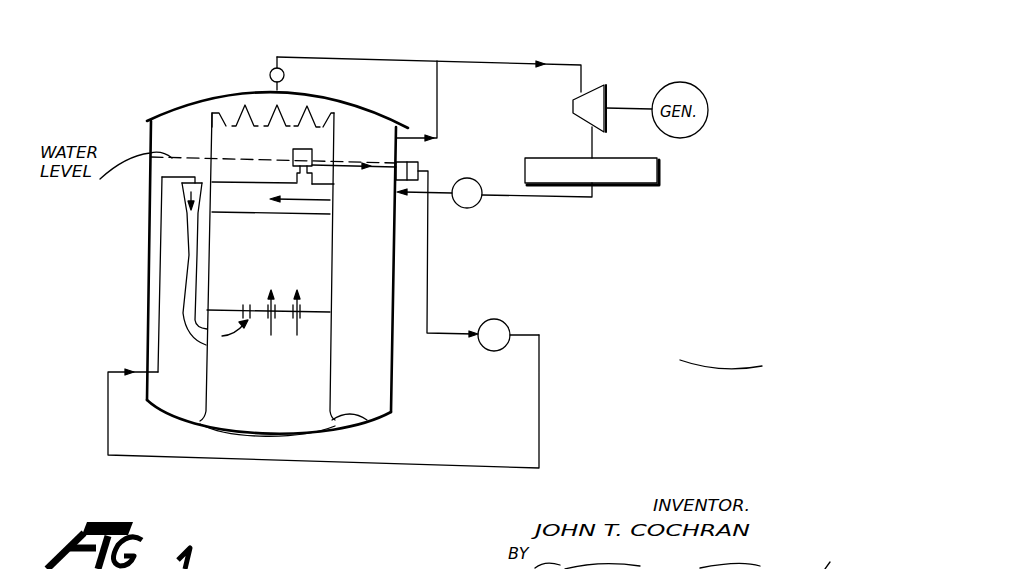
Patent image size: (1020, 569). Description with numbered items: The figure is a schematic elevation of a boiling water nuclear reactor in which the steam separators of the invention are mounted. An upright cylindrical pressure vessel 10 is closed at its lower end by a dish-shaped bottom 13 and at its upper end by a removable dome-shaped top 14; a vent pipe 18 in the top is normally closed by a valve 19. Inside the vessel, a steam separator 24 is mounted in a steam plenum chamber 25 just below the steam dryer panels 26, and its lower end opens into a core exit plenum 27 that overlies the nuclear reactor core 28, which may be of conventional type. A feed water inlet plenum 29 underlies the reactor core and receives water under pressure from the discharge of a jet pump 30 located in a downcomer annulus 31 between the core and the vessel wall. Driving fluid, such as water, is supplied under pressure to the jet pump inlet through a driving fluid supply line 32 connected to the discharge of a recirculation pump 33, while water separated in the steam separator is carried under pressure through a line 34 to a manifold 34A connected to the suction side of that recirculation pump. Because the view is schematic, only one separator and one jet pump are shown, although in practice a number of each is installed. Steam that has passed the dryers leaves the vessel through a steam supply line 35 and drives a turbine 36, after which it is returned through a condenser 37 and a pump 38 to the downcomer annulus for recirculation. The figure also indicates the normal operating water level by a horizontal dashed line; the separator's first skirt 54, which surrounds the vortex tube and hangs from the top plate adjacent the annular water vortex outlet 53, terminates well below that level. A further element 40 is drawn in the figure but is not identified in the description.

The pressure vessel 10 is at (151, 203).
The dish-shaped bottom 13 is at (170, 418).
The dome-shaped top 14 is at (363, 110).
The vent pipe 18 is at (275, 82).
The valve 19 is at (271, 69).
The steam separator 24 is at (286, 170).
The steam plenum chamber 25 is at (237, 147).
The steam dryer panels 26 is at (299, 119).
The core exit plenum 27 is at (250, 207).
The nuclear reactor core 28 is at (340, 266).
The feed water inlet plenum 29 is at (282, 354).
The jet pump 30 is at (183, 261).
The downcomer annulus 31 is at (362, 292).
The driving fluid supply line 32 is at (108, 397).
The recirculation pump 33 is at (504, 320).
The line 34 is at (428, 306).
The manifold 34A is at (420, 162).
The steam supply line 35 is at (440, 100).
The turbine 36 is at (595, 90).
The condenser 37 is at (652, 186).
The pump 38 is at (478, 180).
The control element 40 is at (288, 150).
The annular water vortex outlet 53 is at (330, 378).
The first skirt 54 is at (367, 425).